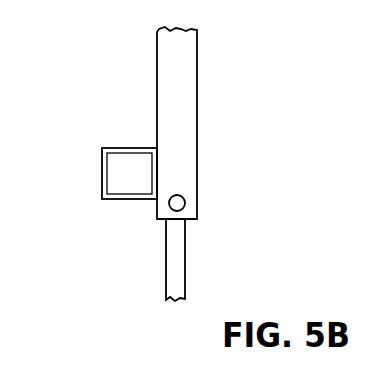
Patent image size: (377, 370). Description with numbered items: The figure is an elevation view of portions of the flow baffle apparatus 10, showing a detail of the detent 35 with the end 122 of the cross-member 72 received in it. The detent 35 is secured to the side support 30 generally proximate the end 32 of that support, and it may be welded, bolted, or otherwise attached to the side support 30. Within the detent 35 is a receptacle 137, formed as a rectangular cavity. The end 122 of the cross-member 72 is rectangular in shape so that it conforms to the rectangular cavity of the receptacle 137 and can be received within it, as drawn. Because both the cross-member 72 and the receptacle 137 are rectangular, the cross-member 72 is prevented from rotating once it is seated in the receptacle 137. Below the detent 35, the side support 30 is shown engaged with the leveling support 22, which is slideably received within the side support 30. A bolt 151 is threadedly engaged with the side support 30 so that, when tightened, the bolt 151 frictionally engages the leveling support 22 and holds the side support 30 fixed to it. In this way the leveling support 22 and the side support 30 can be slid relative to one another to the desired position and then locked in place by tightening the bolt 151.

The flow baffle apparatus 10 is at (251, 129).
The leveling support 22 is at (180, 270).
The side support 30 is at (182, 70).
The end 32 is at (197, 219).
The detent 35 is at (102, 168).
The cross-member 72 is at (123, 162).
The end 122 is at (137, 160).
The receptacle 137 is at (127, 180).
The bolt 151 is at (178, 200).